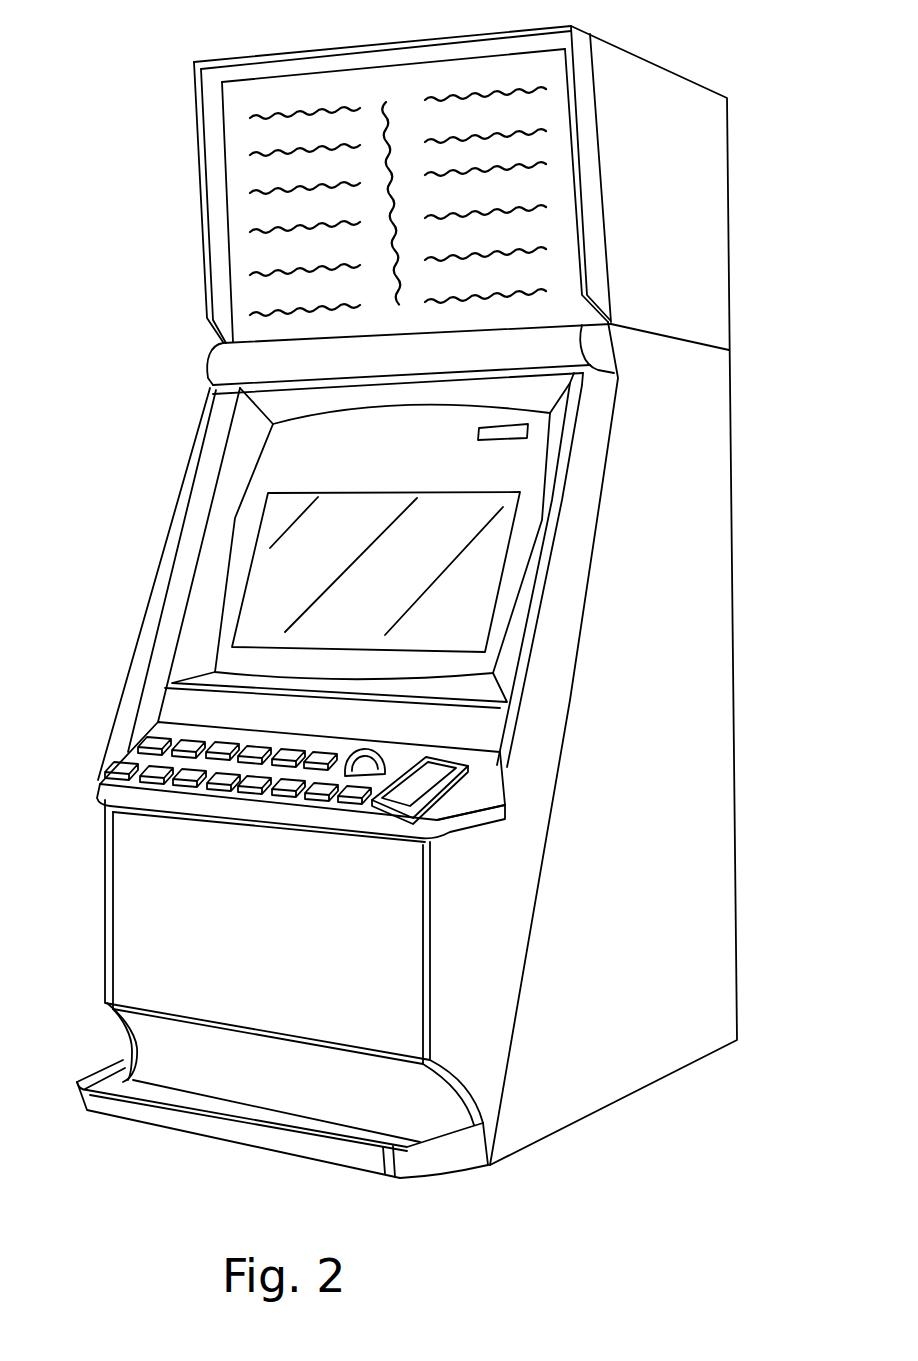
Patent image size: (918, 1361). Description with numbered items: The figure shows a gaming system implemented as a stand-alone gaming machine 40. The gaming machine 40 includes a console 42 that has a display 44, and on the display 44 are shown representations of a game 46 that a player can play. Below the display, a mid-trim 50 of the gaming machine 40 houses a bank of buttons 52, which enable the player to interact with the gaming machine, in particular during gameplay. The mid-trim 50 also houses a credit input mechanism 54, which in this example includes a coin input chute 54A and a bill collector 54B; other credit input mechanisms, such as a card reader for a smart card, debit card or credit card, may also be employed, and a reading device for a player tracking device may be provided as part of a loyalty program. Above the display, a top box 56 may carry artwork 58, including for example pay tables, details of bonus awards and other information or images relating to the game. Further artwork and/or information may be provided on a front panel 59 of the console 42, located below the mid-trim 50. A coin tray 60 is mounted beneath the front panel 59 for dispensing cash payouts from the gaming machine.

The gaming machine 40 is at (684, 60).
The console 42 is at (688, 483).
The display 44 is at (216, 618).
The game 46 is at (255, 560).
The mid-trim 50 is at (98, 782).
The bank of buttons 52 is at (162, 790).
The credit input mechanism 54 is at (453, 738).
The coin input chute 54A is at (375, 745).
The bill collector 54B is at (380, 815).
The top box 56 is at (207, 281).
The artwork 58 is at (262, 160).
The front panel 59 is at (127, 912).
The coin tray 60 is at (73, 1100).